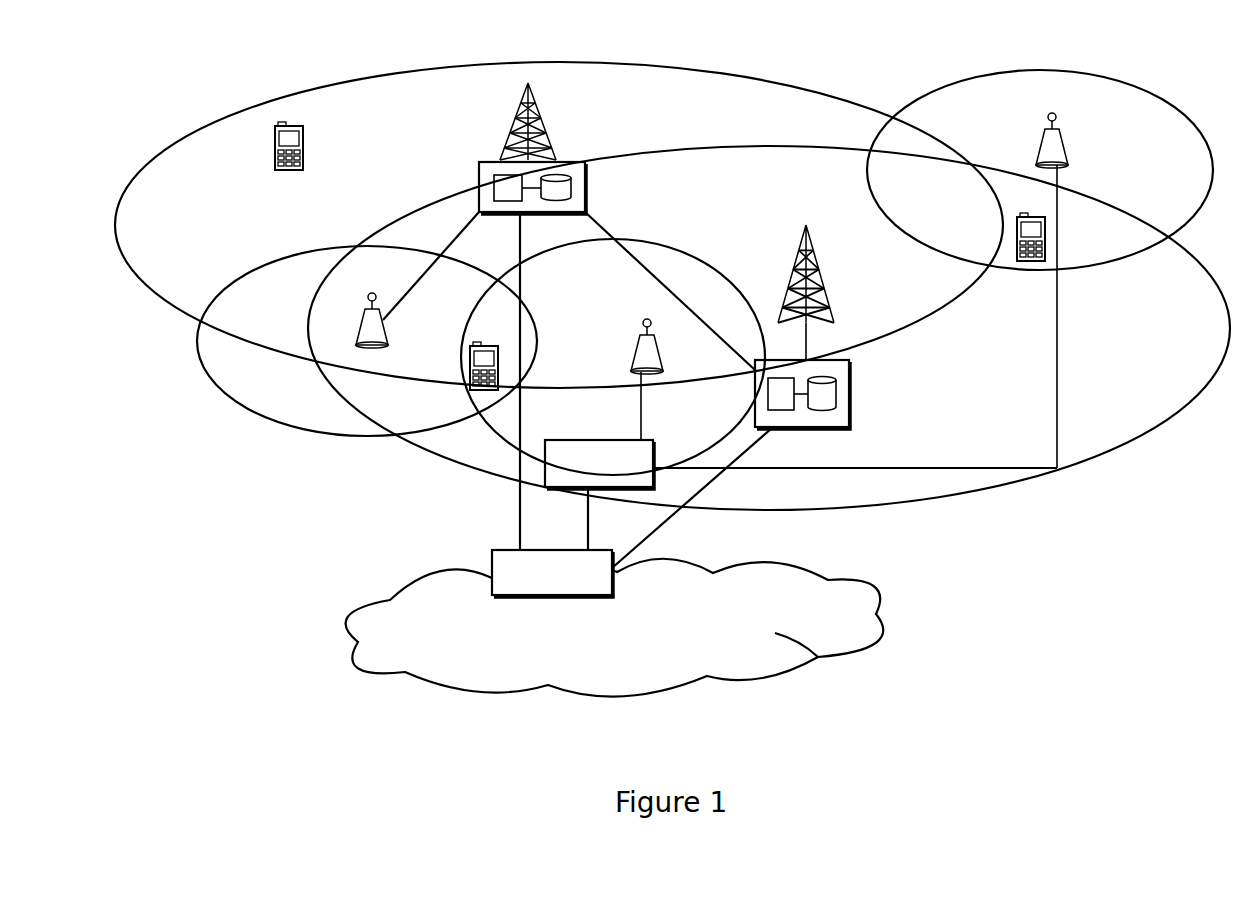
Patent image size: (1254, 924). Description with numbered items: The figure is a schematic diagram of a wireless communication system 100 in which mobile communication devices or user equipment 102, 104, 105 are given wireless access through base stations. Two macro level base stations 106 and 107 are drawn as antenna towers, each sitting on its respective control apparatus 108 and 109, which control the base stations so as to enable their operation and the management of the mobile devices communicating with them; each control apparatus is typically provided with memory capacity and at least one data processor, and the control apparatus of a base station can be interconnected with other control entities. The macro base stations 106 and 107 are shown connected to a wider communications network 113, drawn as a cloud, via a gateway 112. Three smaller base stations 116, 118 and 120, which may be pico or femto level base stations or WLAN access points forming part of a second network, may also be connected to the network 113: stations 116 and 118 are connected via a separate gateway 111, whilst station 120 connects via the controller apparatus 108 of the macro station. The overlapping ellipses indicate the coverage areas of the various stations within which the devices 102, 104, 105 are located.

The wireless communication system 100 is at (208, 111).
The mobile communication device 102 is at (273, 161).
The mobile communication device 104 is at (469, 372).
The mobile communication device 105 is at (1029, 263).
The macro level base station 106 is at (503, 130).
The macro level base station 107 is at (827, 292).
The control apparatus 108 is at (479, 178).
The control apparatus 109 is at (840, 418).
The gateway 111 is at (552, 476).
The gateway 112 is at (496, 552).
The wider communications network 113 is at (418, 605).
The smaller base station 116 is at (1039, 140).
The smaller base station 118 is at (648, 362).
The smaller base station 120 is at (358, 323).